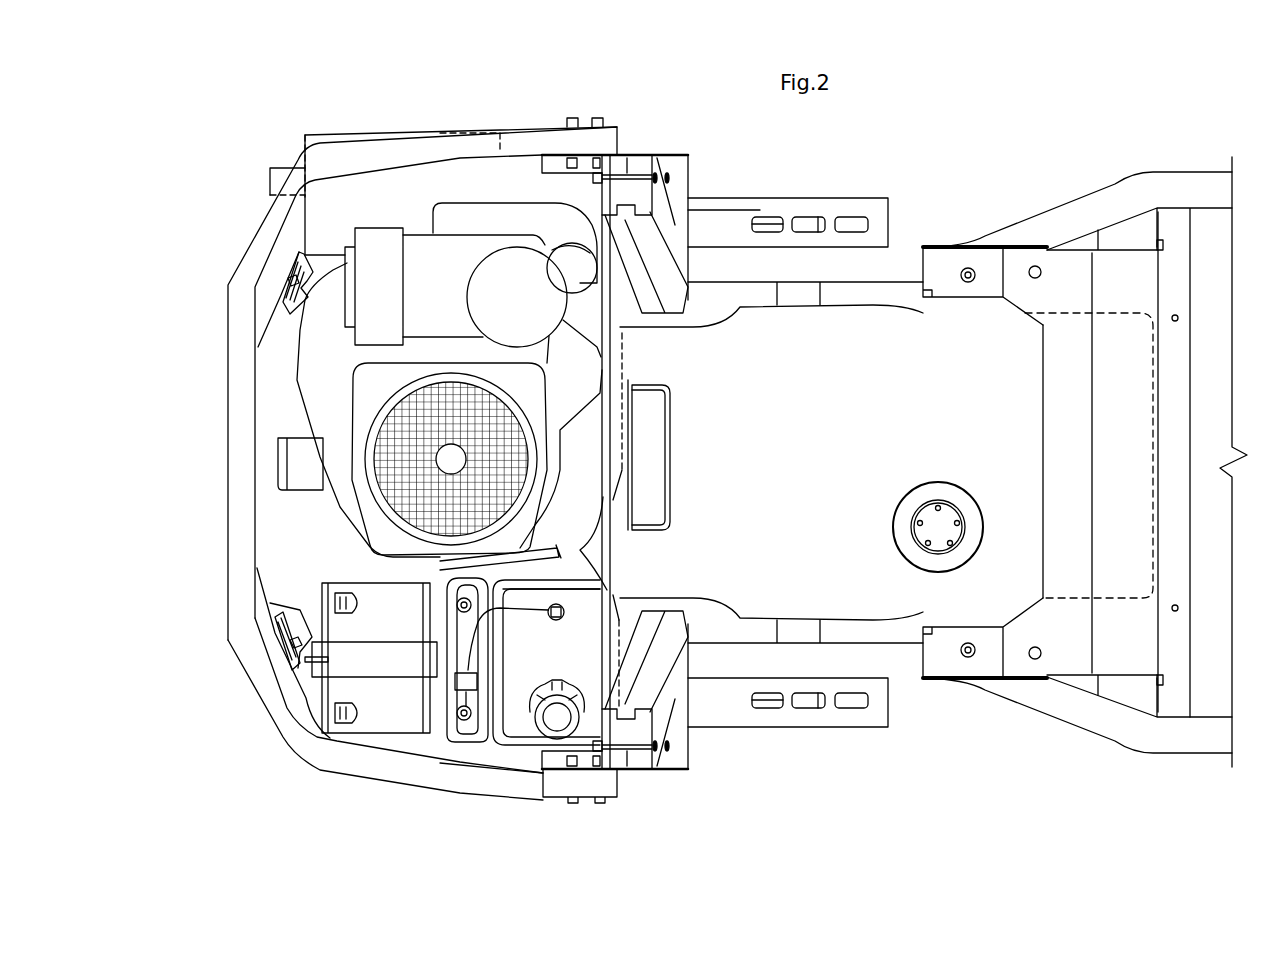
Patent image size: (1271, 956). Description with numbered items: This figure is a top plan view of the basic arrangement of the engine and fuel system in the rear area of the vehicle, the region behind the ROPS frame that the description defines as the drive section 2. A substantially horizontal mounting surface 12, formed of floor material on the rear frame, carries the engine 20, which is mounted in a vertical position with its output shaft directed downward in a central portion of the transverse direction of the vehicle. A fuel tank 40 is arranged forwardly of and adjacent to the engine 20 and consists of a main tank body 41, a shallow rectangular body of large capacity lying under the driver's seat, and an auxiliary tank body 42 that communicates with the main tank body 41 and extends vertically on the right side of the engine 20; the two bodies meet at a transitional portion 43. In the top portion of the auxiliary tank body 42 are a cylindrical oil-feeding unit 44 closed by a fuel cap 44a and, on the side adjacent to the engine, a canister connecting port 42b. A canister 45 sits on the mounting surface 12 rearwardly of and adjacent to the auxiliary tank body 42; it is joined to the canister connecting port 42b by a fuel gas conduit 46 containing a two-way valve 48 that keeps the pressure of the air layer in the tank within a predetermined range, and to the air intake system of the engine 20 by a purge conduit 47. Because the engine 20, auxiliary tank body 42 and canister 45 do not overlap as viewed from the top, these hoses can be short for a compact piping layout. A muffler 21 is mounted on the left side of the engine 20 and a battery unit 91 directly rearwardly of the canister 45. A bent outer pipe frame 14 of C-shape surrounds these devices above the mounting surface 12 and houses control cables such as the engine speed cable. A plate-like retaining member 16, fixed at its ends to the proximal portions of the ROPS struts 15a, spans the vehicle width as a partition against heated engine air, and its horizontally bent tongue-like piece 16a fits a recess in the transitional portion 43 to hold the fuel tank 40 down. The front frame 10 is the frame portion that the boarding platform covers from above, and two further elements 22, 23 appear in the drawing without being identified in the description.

The drive section 2 is at (208, 246).
The front frame 10 is at (1205, 193).
The mounting surface 12 is at (270, 540).
The outer pipe frame 14 is at (238, 467).
The ROPS struts 15a is at (688, 296).
The retaining member 16 is at (627, 360).
The tongue-like piece 16a is at (655, 485).
The engine 20 is at (477, 459).
The muffler 21 is at (328, 142).
The engine body 22 is at (427, 260).
The engine case 23 is at (307, 390).
The fuel tank 40 is at (887, 302).
The main tank body 41 is at (1028, 445).
The auxiliary tank body 42 is at (587, 613).
The canister connecting port 42b is at (555, 620).
The transitional portion 43 is at (591, 546).
The oil-feeding unit 44 is at (493, 747).
The fuel cap 44a is at (558, 723).
The canister 45 is at (460, 762).
The fuel gas conduit 46 is at (460, 633).
The purge conduit 47 is at (470, 575).
The two-way valve 48 is at (460, 683).
The battery unit 91 is at (370, 723).